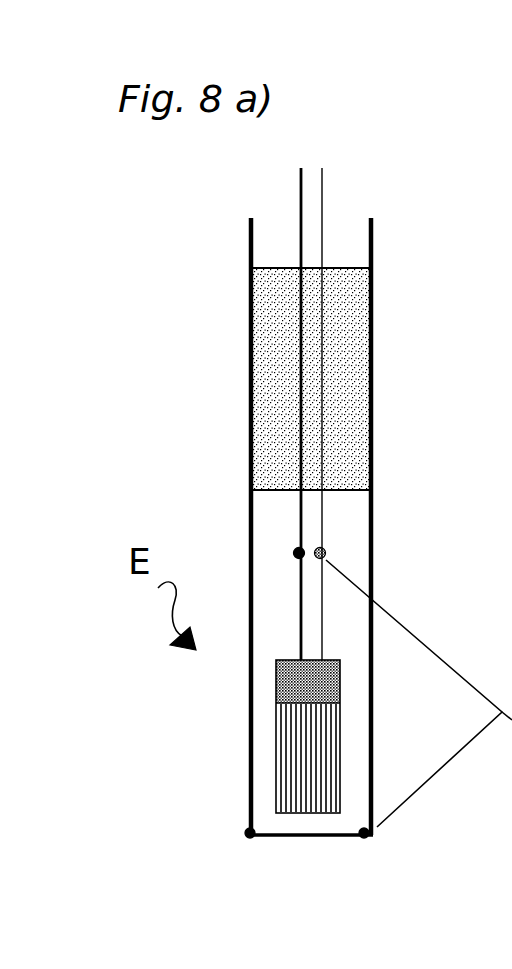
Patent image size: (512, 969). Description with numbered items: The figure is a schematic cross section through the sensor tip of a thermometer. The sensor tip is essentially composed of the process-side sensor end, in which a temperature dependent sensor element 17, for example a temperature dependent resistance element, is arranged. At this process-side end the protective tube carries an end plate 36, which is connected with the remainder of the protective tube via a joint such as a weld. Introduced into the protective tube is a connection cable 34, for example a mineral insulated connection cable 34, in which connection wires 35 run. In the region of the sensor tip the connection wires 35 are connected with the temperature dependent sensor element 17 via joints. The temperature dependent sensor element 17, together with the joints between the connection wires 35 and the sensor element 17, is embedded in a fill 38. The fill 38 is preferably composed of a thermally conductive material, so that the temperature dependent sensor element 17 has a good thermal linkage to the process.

The temperature dependent sensor element 17 is at (330, 730).
The connection cable 34 is at (350, 380).
The connection wires 35 is at (300, 180).
The end plate 36 is at (311, 837).
The fill 38 is at (278, 578).